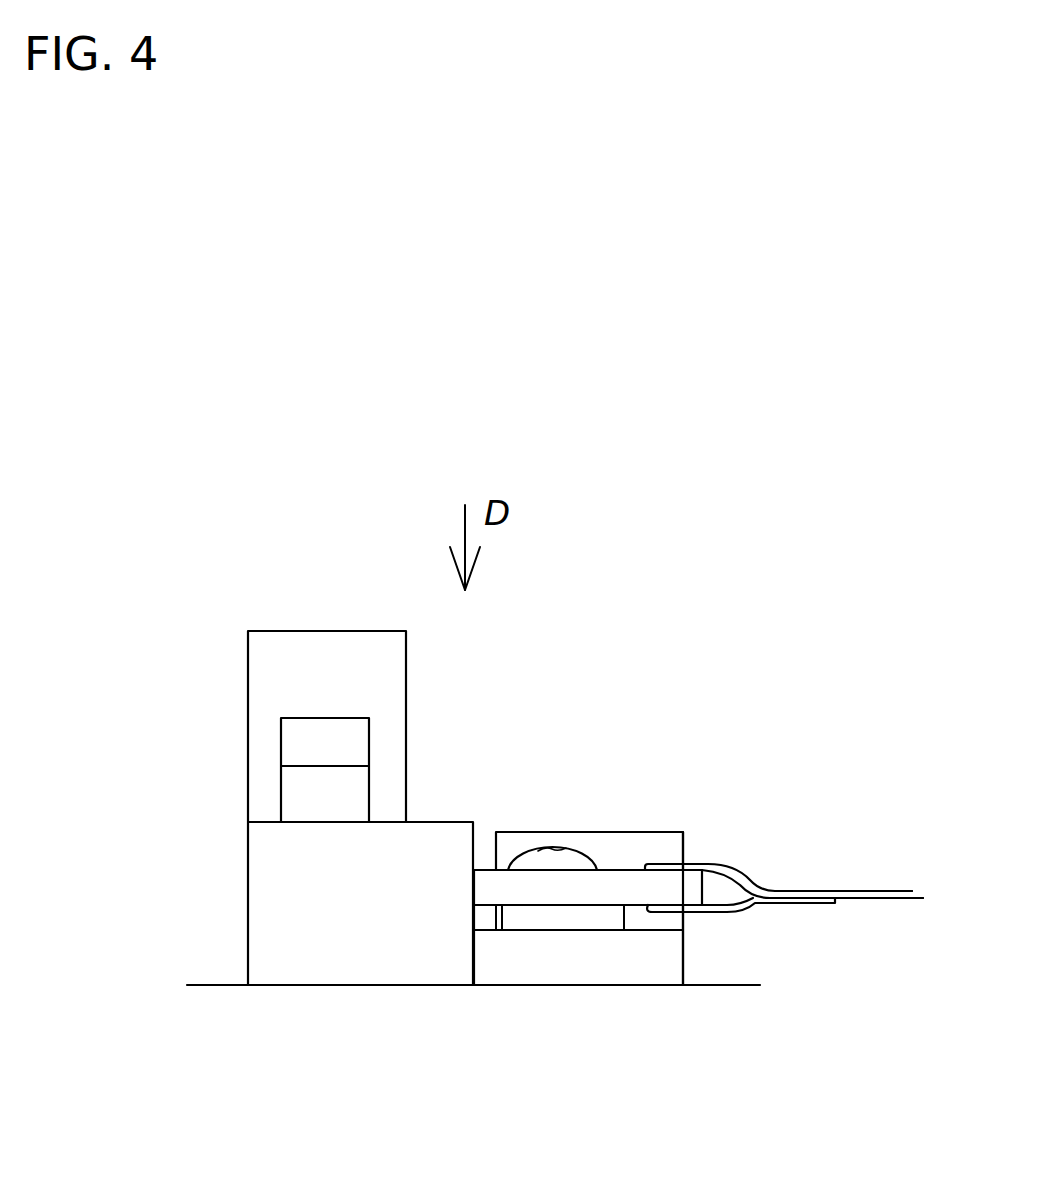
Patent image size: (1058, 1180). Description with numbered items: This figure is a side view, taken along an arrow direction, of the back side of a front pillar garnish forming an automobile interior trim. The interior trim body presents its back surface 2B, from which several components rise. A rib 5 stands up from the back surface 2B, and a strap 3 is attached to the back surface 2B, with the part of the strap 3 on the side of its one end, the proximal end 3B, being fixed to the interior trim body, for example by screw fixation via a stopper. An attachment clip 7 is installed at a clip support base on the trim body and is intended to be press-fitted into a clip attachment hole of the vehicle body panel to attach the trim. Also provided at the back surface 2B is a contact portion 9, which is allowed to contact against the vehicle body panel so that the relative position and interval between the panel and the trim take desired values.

The back surface 2B is at (217, 982).
The strap 3 is at (880, 876).
The one end (proximal end) of the strap 3B is at (733, 907).
The rib 5 is at (684, 843).
The attachment clip 7 is at (238, 700).
The contact portion 9 is at (437, 820).